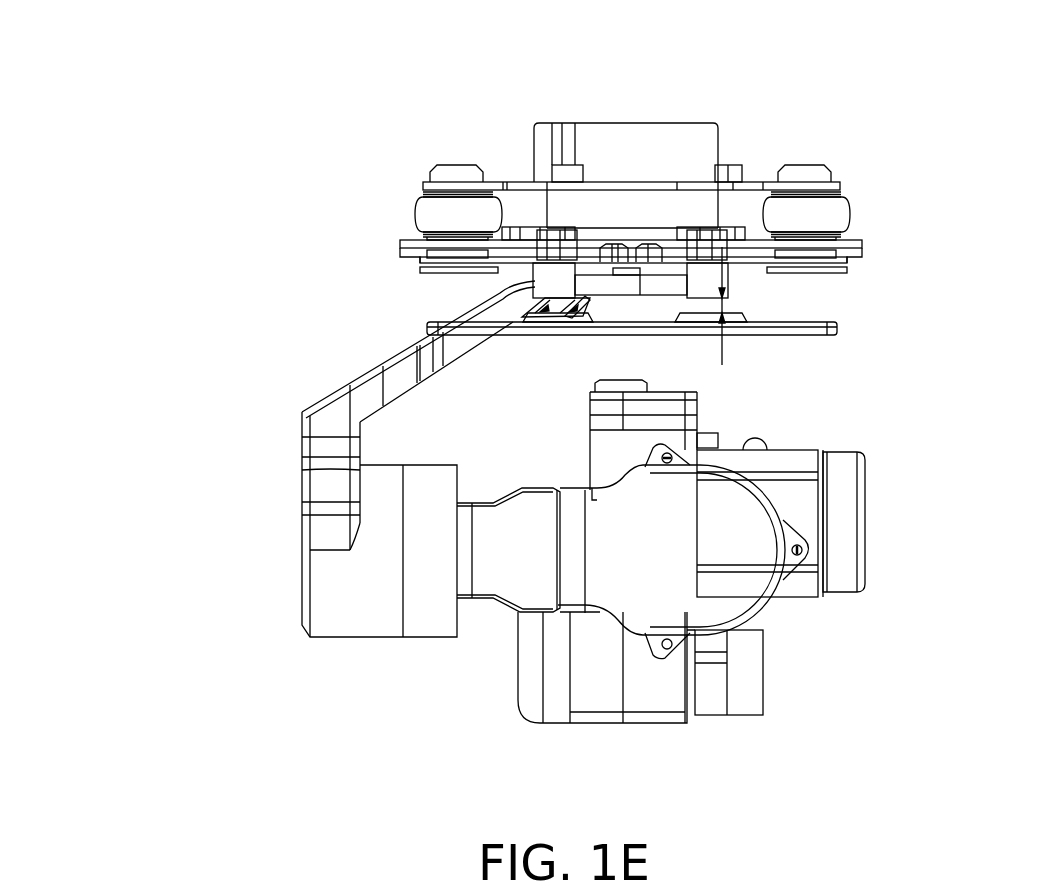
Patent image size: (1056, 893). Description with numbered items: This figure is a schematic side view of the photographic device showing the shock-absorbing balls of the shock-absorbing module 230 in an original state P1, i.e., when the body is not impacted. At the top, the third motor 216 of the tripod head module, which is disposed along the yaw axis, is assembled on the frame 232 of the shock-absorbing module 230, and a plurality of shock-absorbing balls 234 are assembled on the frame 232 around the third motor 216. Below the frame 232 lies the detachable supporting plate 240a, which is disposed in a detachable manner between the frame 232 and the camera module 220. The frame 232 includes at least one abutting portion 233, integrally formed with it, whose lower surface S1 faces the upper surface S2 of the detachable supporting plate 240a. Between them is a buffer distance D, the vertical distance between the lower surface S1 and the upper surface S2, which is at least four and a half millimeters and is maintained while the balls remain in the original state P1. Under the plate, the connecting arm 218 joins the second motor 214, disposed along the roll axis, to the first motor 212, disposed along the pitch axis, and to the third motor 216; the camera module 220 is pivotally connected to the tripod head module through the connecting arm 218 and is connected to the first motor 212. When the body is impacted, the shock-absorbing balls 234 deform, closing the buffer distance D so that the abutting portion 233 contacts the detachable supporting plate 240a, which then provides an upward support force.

The third motor 216 is at (642, 143).
The shock-absorbing module 230 is at (993, 182).
The shock-absorbing balls 234 is at (838, 212).
The frame 232 is at (838, 267).
The abutting portion 233 is at (698, 292).
The buffer distance D is at (723, 305).
The detachable supporting plate 240a is at (812, 328).
The lower surface S1 is at (523, 320).
The upper surface S2 is at (585, 290).
The connecting arm 218 is at (395, 368).
The second motor 214 is at (358, 627).
The first motor 212 is at (747, 585).
The camera module 220 is at (847, 540).
The original state P1 is at (1044, 792).